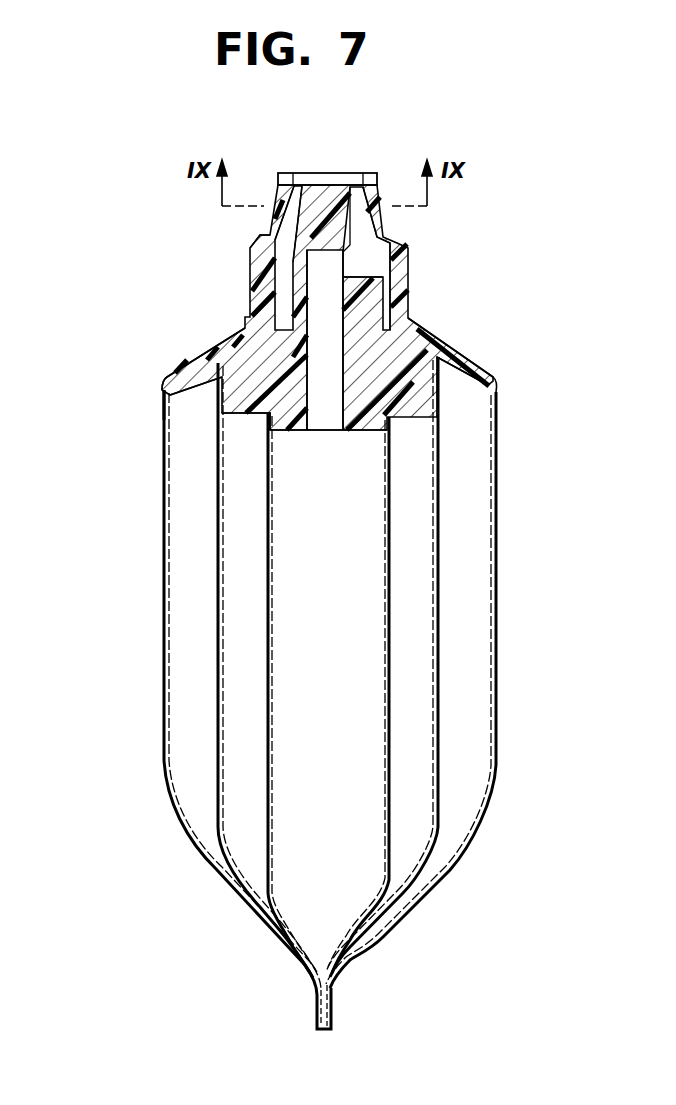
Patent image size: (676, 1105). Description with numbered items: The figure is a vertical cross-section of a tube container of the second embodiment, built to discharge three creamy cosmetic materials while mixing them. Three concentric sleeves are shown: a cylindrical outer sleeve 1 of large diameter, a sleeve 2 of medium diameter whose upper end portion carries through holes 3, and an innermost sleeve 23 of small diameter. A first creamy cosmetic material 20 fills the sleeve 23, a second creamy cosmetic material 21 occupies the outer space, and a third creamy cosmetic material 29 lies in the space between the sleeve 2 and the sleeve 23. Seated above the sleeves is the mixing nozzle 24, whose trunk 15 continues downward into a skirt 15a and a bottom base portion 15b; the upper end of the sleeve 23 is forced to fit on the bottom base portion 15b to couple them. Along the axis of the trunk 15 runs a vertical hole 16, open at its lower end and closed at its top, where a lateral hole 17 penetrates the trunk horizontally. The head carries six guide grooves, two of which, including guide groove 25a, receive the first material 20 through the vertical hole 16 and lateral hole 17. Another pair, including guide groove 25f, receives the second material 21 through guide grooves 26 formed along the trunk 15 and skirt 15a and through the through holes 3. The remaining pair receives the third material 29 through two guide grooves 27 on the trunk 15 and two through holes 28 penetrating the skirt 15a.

The outer sleeve 1 is at (497, 601).
The inner sleeve 2 is at (441, 641).
The through holes 3 is at (166, 405).
The trunk 15 is at (303, 275).
The skirt 15a is at (240, 347).
The bottom base portion 15b is at (270, 439).
The vertical hole 16 is at (320, 400).
The lateral hole 17 is at (380, 327).
The first creamy cosmetic material 20 is at (340, 818).
The second creamy cosmetic material 21 is at (466, 541).
The sleeve of small diameter 23 is at (390, 692).
The mixing nozzle 24 is at (337, 173).
The guide groove 25a is at (360, 213).
The guide groove 25f is at (287, 247).
The guide grooves 26 is at (279, 334).
The guide grooves 27 is at (397, 335).
The through holes 28 is at (441, 357).
The third creamy cosmetic material 29 is at (408, 753).